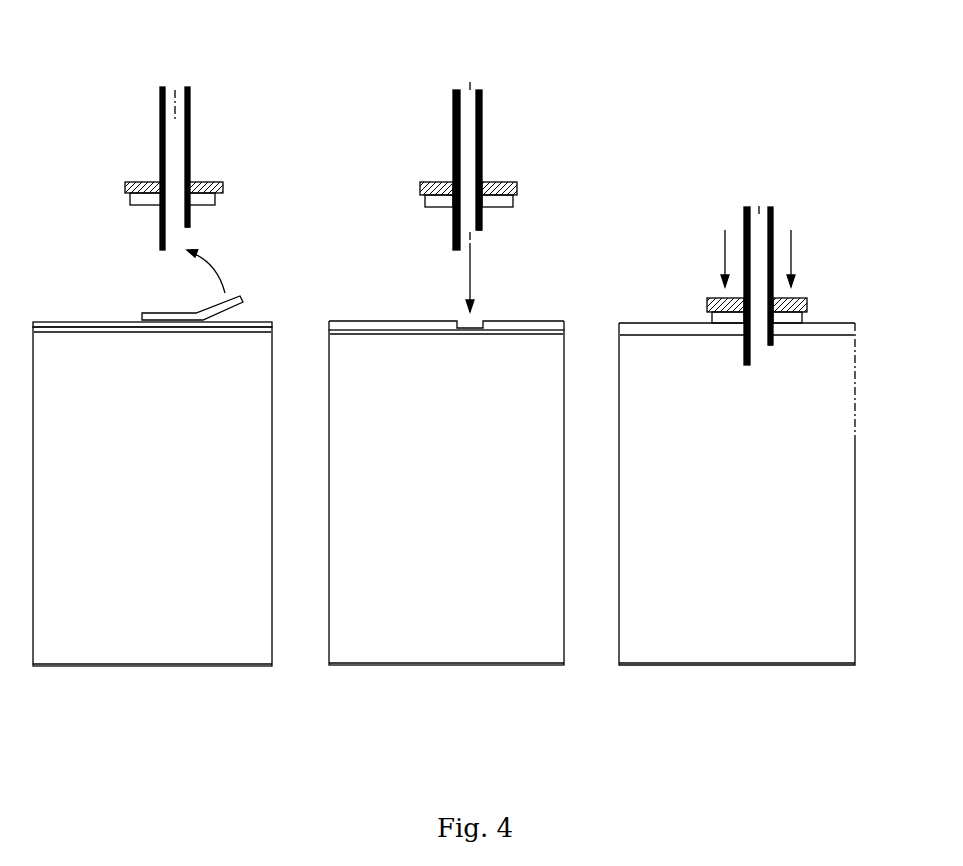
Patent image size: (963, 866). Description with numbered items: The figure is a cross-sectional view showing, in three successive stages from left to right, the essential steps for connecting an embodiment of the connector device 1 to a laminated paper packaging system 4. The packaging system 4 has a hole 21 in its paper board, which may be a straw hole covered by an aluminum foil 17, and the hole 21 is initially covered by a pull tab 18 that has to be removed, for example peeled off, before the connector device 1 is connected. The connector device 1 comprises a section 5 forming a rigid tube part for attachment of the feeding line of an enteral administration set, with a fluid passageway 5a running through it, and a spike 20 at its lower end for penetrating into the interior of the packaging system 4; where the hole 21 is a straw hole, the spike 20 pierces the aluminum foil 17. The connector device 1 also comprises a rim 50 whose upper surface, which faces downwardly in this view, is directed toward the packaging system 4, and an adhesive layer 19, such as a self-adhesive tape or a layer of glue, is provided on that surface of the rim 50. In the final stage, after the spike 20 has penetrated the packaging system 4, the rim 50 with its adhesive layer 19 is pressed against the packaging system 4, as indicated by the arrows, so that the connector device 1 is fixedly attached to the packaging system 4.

The connector device 1 is at (207, 143).
The laminated paper packaging system 4 is at (274, 395).
The section 5 is at (188, 98).
The fluid passageway 5a is at (175, 90).
The aluminum foil 17 is at (271, 333).
The pull tab 18 is at (247, 298).
The adhesive layer 19 is at (208, 202).
The spike 20 is at (188, 220).
The hole 21 is at (273, 322).
The rim 50 is at (210, 183).